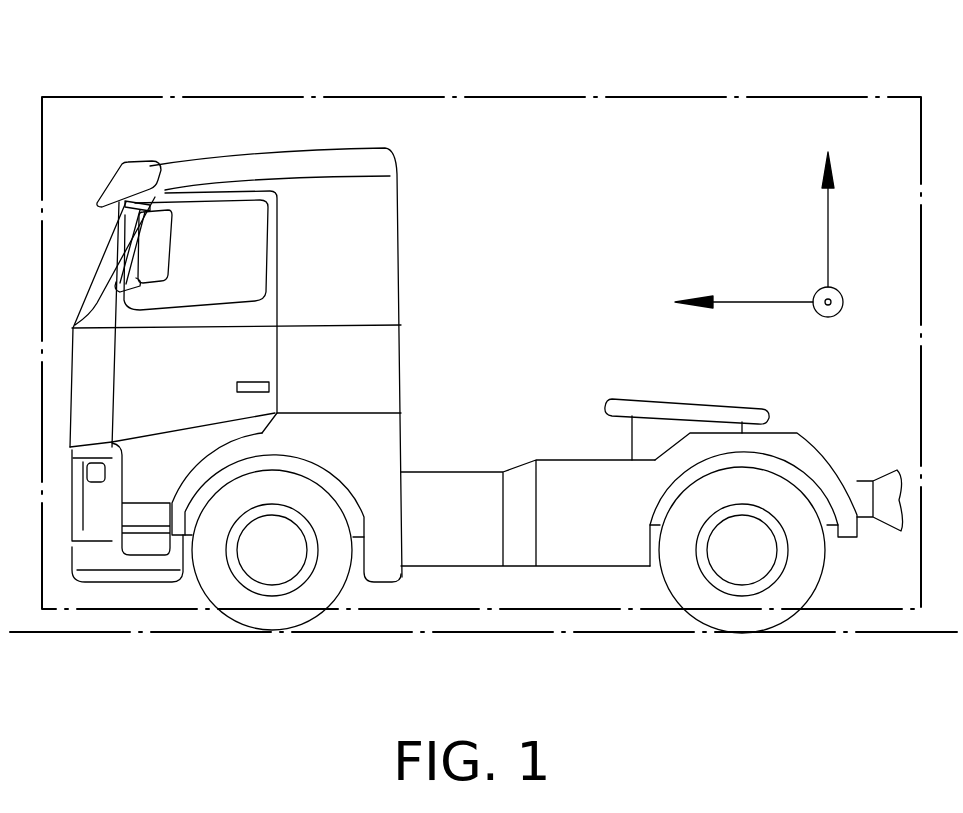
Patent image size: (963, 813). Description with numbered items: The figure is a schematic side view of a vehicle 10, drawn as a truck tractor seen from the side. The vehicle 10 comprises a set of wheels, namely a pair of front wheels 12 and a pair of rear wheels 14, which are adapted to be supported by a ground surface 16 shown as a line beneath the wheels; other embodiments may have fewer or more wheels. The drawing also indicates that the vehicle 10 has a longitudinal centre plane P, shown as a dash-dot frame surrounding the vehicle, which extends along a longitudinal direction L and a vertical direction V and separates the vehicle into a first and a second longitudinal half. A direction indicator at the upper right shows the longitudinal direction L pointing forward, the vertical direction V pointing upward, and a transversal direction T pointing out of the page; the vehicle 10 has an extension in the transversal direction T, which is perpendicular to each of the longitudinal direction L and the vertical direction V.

The vehicle 10 is at (519, 215).
The front wheels 12 is at (271, 600).
The rear wheels 14 is at (744, 600).
The ground surface 16 is at (89, 634).
The longitudinal centre plane P is at (257, 97).
The vertical direction V is at (846, 219).
The longitudinal direction L is at (744, 328).
The transversal direction T is at (844, 320).